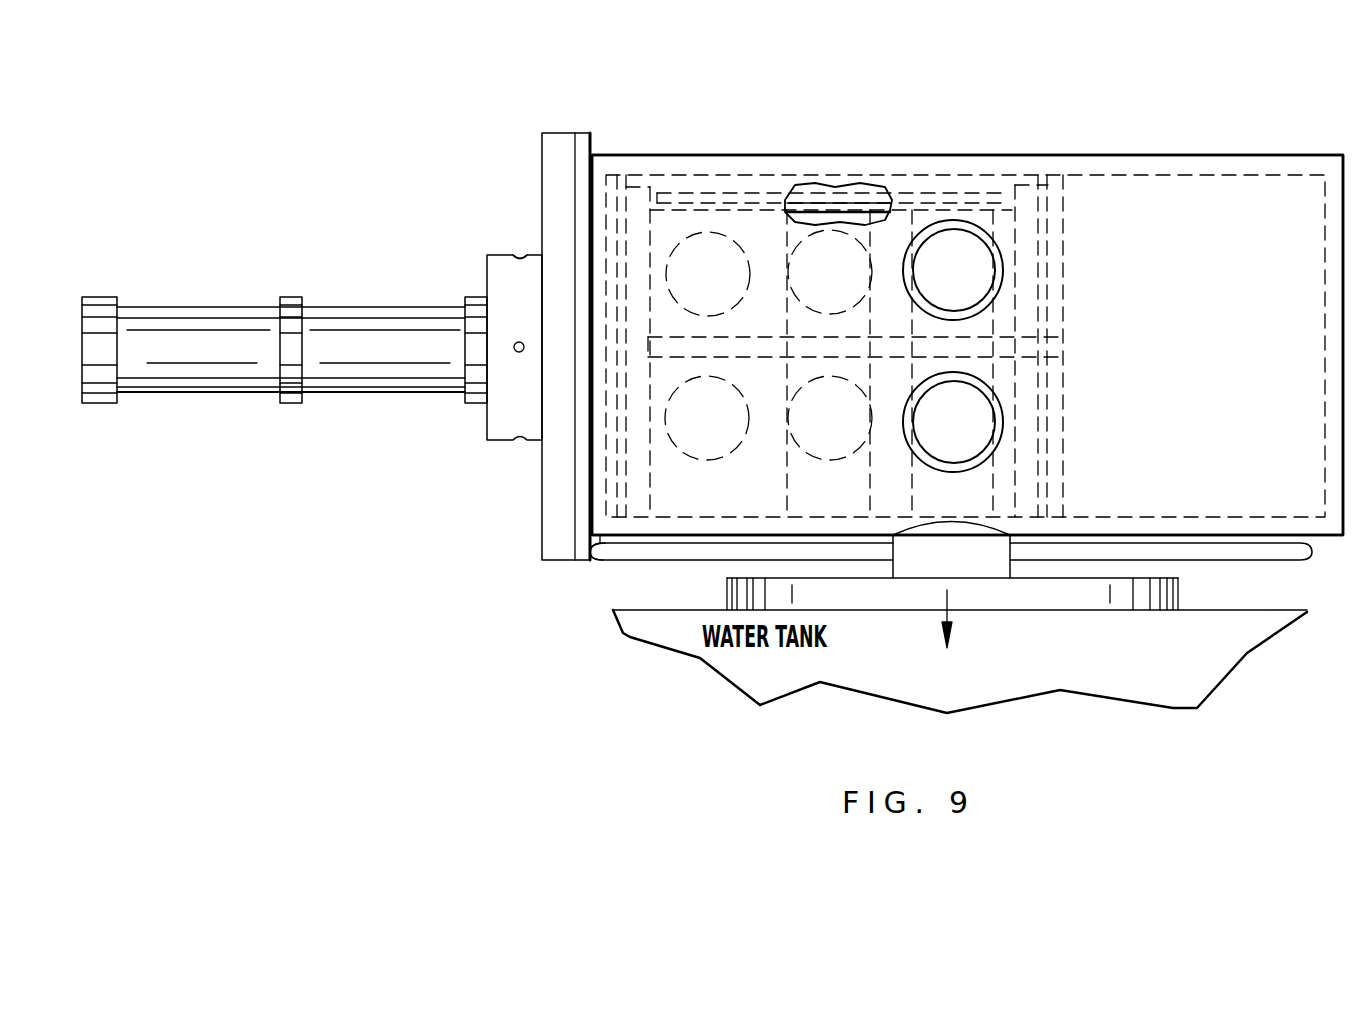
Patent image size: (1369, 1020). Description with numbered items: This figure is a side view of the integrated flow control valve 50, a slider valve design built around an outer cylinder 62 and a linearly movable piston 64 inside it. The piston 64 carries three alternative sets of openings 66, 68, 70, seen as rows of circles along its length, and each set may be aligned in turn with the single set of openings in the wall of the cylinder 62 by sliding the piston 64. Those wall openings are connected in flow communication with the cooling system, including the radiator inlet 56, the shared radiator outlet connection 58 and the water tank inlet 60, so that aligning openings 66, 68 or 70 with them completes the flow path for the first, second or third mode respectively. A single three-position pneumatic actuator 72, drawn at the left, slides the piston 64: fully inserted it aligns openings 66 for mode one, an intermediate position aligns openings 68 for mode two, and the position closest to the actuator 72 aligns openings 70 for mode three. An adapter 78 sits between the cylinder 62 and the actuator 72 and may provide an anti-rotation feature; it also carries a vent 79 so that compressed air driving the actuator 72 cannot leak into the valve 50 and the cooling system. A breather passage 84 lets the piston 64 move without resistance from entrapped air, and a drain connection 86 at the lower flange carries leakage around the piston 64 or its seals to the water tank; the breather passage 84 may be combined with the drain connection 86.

The flow control valve 50 is at (1320, 123).
The radiator inlet 56 is at (982, 258).
The radiator outlet connection 58 is at (978, 415).
The water tank inlet 60 is at (928, 567).
The outer cylinder 62 is at (1130, 157).
The piston 64 is at (713, 505).
The openings 66 is at (697, 233).
The openings 68 is at (782, 245).
The openings 70 is at (955, 240).
The three-position pneumatic actuator 72 is at (183, 392).
The adapter 78 is at (487, 290).
The vent 79 is at (520, 255).
The breather passage 84 is at (830, 190).
The drain connection 86 is at (623, 565).